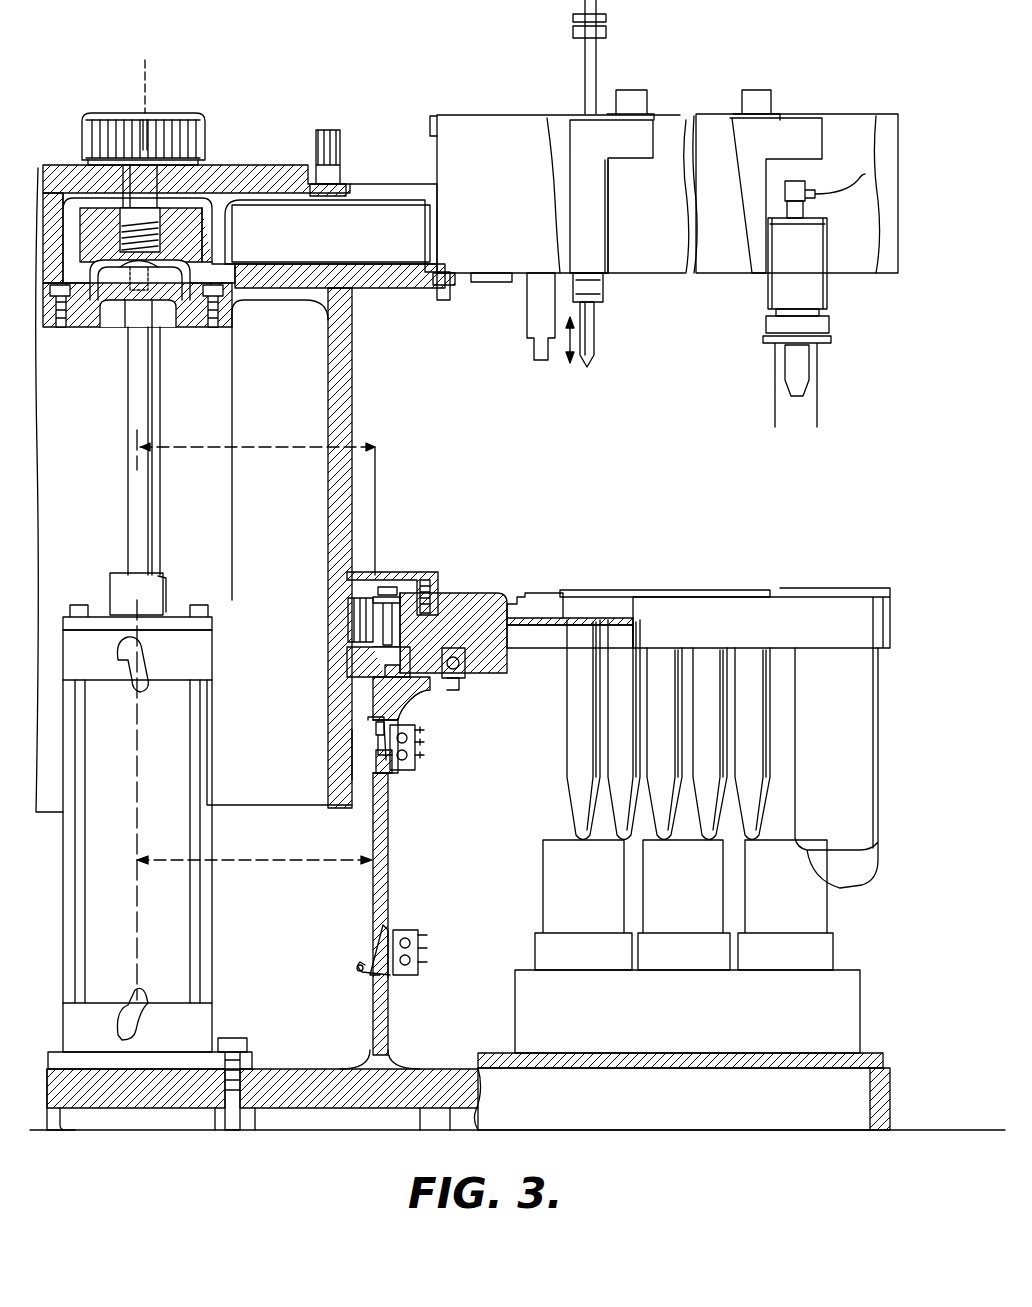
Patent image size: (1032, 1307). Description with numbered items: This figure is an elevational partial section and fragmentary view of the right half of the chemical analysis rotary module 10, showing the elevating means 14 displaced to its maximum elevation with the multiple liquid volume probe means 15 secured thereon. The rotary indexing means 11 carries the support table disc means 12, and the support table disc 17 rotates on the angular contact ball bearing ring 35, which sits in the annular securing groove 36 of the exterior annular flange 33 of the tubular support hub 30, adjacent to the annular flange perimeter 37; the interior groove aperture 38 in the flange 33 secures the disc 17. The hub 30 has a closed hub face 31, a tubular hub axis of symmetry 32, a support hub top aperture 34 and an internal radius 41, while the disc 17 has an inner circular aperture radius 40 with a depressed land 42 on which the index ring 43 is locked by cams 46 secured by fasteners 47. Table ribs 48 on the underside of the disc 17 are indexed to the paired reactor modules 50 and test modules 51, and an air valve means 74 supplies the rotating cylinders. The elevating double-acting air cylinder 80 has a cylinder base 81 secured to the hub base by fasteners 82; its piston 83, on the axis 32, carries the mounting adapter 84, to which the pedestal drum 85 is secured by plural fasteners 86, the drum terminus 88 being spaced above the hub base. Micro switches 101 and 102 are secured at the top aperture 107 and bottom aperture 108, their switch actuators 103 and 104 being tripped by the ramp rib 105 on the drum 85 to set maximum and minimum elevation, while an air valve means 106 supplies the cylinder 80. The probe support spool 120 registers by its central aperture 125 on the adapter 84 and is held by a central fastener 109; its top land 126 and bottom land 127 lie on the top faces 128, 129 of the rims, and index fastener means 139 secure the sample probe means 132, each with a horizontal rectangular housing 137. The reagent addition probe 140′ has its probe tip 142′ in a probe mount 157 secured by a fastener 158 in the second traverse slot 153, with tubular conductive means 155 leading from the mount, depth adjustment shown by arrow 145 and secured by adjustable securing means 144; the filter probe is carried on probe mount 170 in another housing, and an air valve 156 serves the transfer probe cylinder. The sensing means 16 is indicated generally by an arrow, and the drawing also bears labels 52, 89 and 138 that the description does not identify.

The chemical analysis rotary module 10 is at (322, 80).
The rotary indexing means 11 is at (425, 826).
The support table disc means 12 is at (540, 582).
The elevating means 14 is at (376, 494).
The multiple liquid volume probe means 15 is at (682, 136).
The sensing means 16 is at (540, 792).
The support table disc 17 is at (445, 593).
The tubular support hub 30 is at (390, 886).
The closed hub face 31 is at (275, 1097).
The tubular hub axis of symmetry 32 is at (148, 80).
The exterior annular flange 33 is at (405, 682).
The support hub top aperture 34 is at (540, 618).
The angular contact ball bearing ring 35 is at (466, 664).
The annular securing groove 36 is at (453, 692).
The annular flange perimeter 37 is at (458, 674).
The interior groove aperture 38 is at (385, 667).
The inner circular aperture radius 40 is at (232, 447).
The internal radius 41 is at (243, 860).
The depressed land 42 is at (420, 625).
The index ring 43 is at (348, 632).
The cams 46 is at (370, 657).
The fasteners 47 is at (387, 587).
The table rib 48 is at (570, 640).
The reactor module 50 is at (836, 768).
The test module 51 is at (618, 597).
The clamp 52 is at (410, 572).
The air valve means 74 is at (592, 901).
The elevating double-acting air cylinder 80 is at (165, 742).
The cylinder base 81 is at (200, 1052).
The fasteners 82 is at (243, 1047).
The piston 83 is at (128, 482).
The mounting adapter 84 is at (200, 320).
The pedestal drum 85 is at (352, 332).
The plural fasteners 86 is at (60, 327).
The drum terminus 88 is at (342, 807).
The stem flare 89 is at (316, 1080).
The micro switch 101 is at (418, 750).
The micro switch 102 is at (418, 967).
The switch actuator 103 is at (368, 720).
The switch actuator 104 is at (358, 967).
The ramp rib 105 is at (352, 748).
The air valve means 106 is at (692, 898).
The top aperture 107 is at (392, 770).
The bottom aperture 108 is at (392, 934).
The central fastener 109 is at (128, 90).
The probe support spool 120 is at (232, 165).
The central aperture 125 is at (140, 178).
The top land 126 is at (340, 165).
The bottom land 127 is at (430, 252).
The top face 128 is at (268, 165).
The top face 129 is at (300, 264).
The sample probe means 132 is at (460, 135).
The horizontal rectangular housing 137 is at (856, 154).
The arm 138 is at (395, 184).
The index fastener means 139 is at (440, 300).
The reagent addition probe 140′ is at (594, 202).
The probe tip 142′ is at (594, 322).
The adjustable securing means 144 is at (603, 288).
The arrow 145 is at (566, 347).
The second traverse slot 153 is at (553, 118).
The tubular conductive means 155 is at (597, 70).
The air valve 156 is at (794, 898).
The probe mount 157 is at (611, 196).
The fastener 158 is at (635, 100).
The probe mount 170 is at (776, 195).